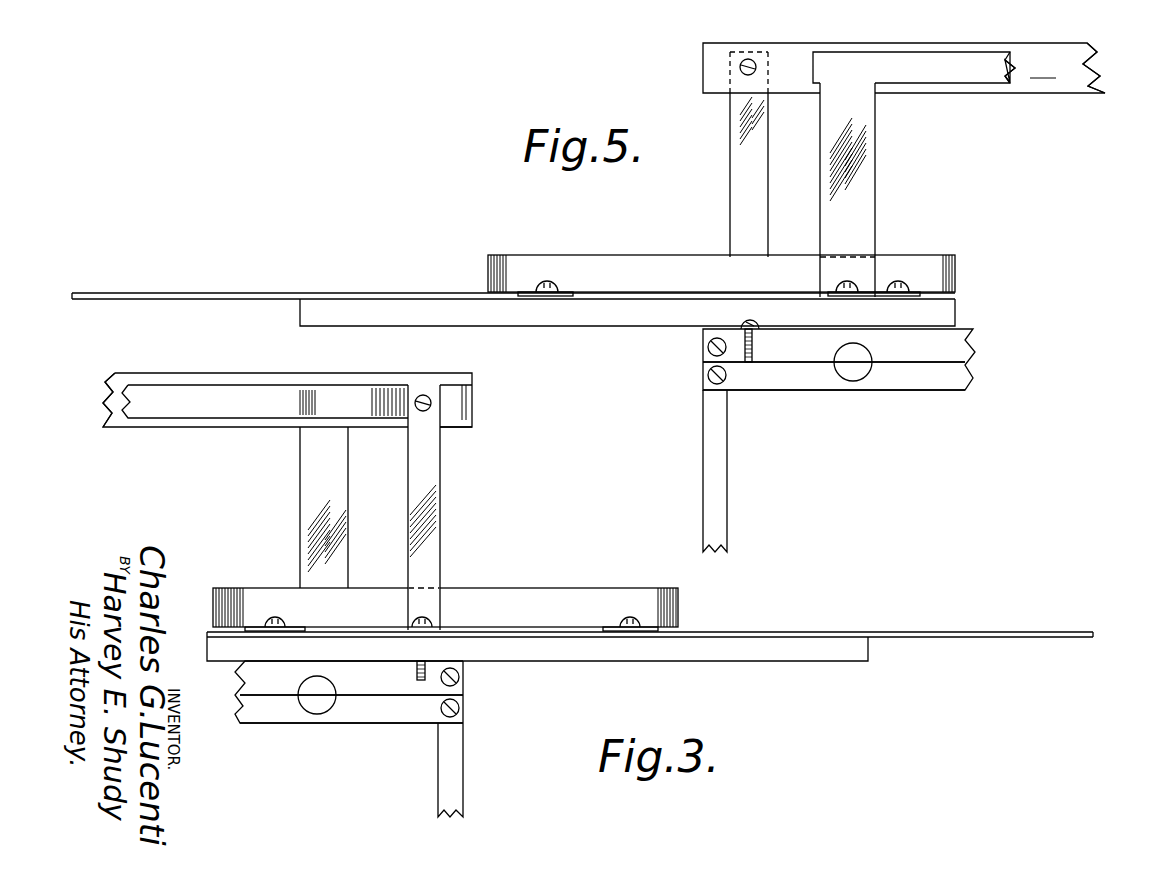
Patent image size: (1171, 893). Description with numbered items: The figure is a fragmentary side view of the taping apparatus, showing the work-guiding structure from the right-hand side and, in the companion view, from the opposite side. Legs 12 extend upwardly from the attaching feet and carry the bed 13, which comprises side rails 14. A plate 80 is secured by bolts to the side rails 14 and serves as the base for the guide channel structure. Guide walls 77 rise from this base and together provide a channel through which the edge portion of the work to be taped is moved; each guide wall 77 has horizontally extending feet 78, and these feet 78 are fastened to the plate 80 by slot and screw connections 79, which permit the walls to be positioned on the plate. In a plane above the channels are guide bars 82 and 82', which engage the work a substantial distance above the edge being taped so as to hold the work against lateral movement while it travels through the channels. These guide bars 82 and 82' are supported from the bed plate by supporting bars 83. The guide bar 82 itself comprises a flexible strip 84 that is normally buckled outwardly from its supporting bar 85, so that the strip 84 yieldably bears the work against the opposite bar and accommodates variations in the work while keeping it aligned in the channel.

In FIG. 5, the legs 12 is at (720, 485).
In FIG. 3, the legs 12 is at (455, 765).
In FIG. 5, the bed 13 is at (890, 392).
In FIG. 3, the bed 13 is at (345, 723).
In FIG. 5, the side rails 14 is at (920, 372).
In FIG. 3, the side rails 14 is at (378, 705).
In FIG. 5, the guide walls 77 is at (700, 289).
In FIG. 3, the guide walls 77 is at (530, 622).
In FIG. 5, the horizontally extending feet 78 is at (563, 297).
In FIG. 3, the horizontally extending feet 78 is at (262, 625).
In FIG. 5, the slot and screw connections 79 is at (560, 290).
In FIG. 3, the slot and screw connections 79 is at (275, 620).
In FIG. 5, the plate 80 is at (210, 293).
In FIG. 3, the plate 80 is at (908, 633).
In FIG. 5, the guide bar 82 is at (904, 68).
In FIG. 3, the guide bar 82 is at (287, 382).
In FIG. 5, the guide bar 82' is at (1113, 68).
In FIG. 3, the guide bar 82' is at (109, 400).
In FIG. 5, the supporting bars 83 is at (752, 165).
In FIG. 3, the supporting bars 83 is at (328, 475).
In FIG. 5, the flexible strip 84 is at (1044, 68).
In FIG. 3, the flexible strip 84 is at (403, 378).
In FIG. 3, the supporting bar 85 is at (265, 401).